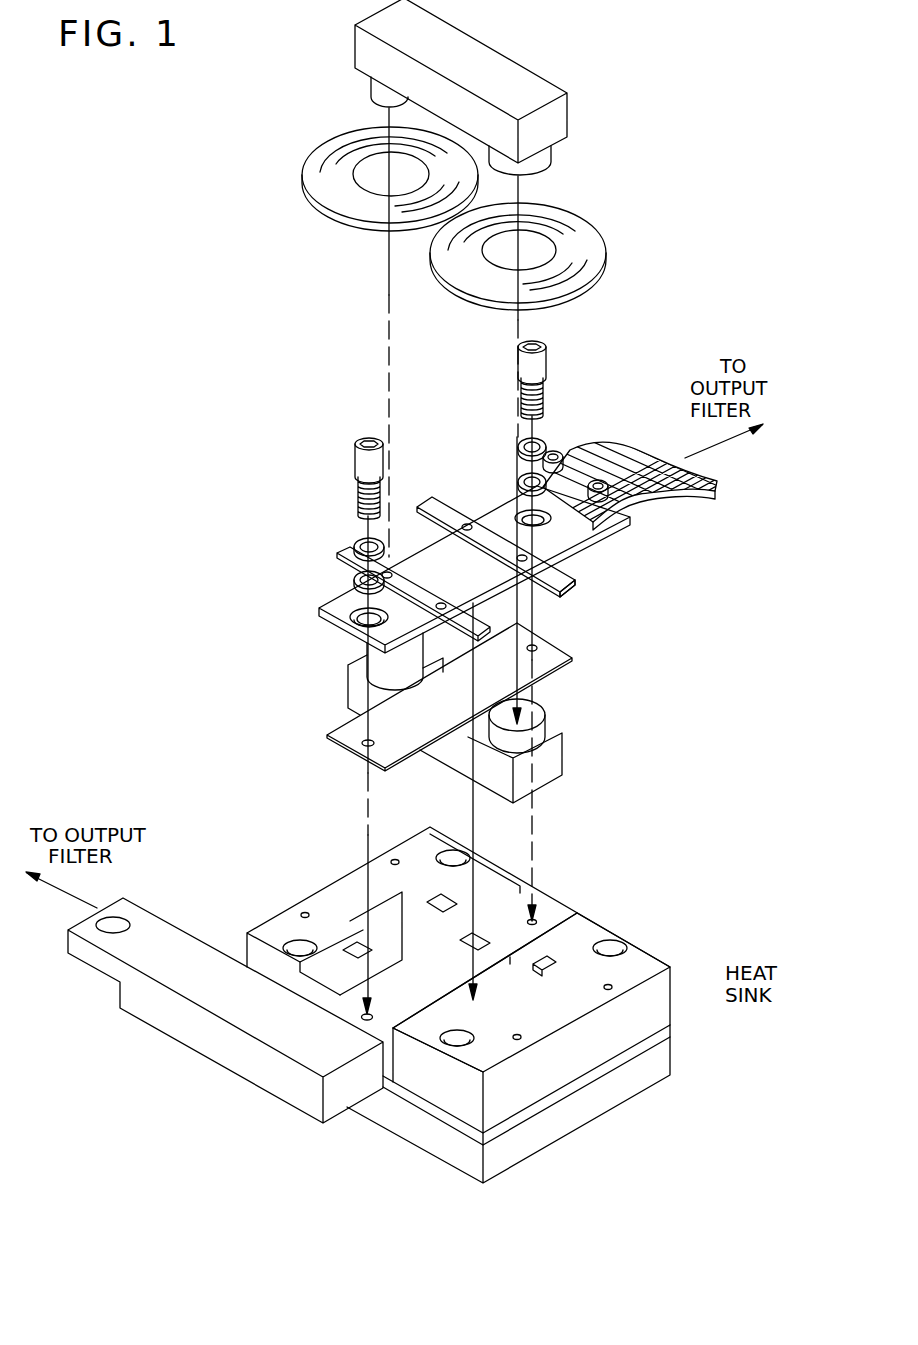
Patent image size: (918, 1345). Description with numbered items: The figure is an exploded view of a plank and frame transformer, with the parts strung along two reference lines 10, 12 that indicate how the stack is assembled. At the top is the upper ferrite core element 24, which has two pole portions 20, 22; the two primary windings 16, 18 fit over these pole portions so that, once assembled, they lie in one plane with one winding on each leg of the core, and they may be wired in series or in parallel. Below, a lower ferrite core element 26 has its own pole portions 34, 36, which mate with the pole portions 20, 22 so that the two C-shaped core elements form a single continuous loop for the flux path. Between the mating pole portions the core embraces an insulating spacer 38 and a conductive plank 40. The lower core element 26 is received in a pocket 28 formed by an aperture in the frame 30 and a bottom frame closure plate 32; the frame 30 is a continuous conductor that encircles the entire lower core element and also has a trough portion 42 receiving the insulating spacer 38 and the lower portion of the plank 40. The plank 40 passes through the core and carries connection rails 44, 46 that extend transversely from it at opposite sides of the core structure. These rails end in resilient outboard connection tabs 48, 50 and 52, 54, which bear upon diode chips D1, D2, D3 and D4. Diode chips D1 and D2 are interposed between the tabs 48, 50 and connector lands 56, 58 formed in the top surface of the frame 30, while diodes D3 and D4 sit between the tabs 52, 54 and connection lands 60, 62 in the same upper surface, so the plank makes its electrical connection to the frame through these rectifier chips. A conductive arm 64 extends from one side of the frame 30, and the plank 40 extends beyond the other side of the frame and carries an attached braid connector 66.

The reference line 10 is at (389, 295).
The reference line 12 is at (517, 320).
The primary winding 16 is at (327, 180).
The primary winding 18 is at (583, 253).
The pole portion 20 is at (383, 90).
The pole portion 22 is at (532, 160).
The upper ferrite core element 24 is at (505, 82).
The lower ferrite core element 26 is at (540, 772).
The pocket 28 is at (377, 927).
The frame 30 is at (598, 1044).
The bottom frame closure plate 32 is at (555, 1098).
The pole portion 34 is at (387, 670).
The pole portion 36 is at (533, 712).
The insulating spacer 38 is at (540, 665).
The conductive plank 40 is at (572, 542).
The trough portion 42 is at (550, 927).
The connection rail 44 is at (410, 590).
The connection rail 46 is at (497, 542).
The connection tab 48 is at (455, 625).
The connection tab 50 is at (353, 545).
The connection tab 52 is at (572, 572).
The connection tab 54 is at (445, 510).
The connector land 56 is at (437, 1013).
The connector land 58 is at (350, 968).
The connection land 60 is at (577, 945).
The connection land 62 is at (490, 892).
The conductive arm 64 is at (232, 992).
The braid connector 66 is at (643, 495).
The diode chip D1 is at (473, 942).
The diode chip D2 is at (357, 947).
The diode chip D3 is at (545, 962).
The diode chip D4 is at (443, 900).